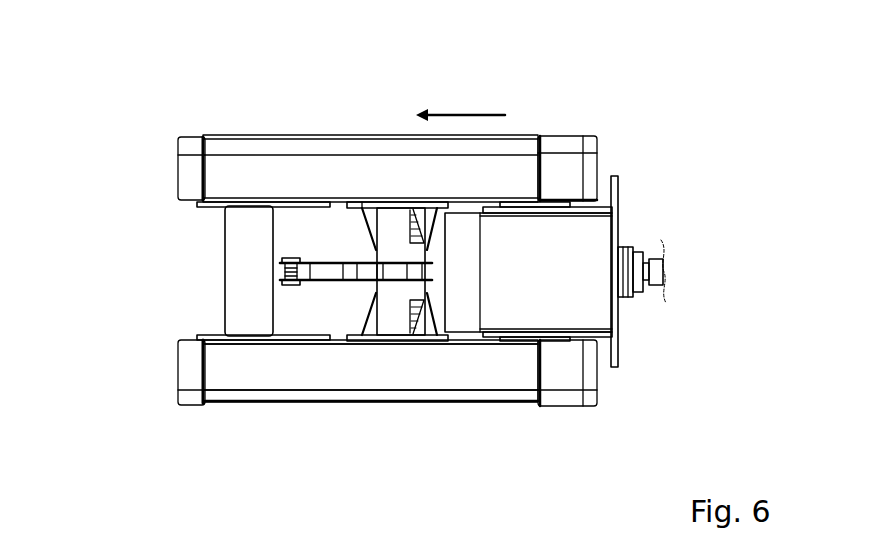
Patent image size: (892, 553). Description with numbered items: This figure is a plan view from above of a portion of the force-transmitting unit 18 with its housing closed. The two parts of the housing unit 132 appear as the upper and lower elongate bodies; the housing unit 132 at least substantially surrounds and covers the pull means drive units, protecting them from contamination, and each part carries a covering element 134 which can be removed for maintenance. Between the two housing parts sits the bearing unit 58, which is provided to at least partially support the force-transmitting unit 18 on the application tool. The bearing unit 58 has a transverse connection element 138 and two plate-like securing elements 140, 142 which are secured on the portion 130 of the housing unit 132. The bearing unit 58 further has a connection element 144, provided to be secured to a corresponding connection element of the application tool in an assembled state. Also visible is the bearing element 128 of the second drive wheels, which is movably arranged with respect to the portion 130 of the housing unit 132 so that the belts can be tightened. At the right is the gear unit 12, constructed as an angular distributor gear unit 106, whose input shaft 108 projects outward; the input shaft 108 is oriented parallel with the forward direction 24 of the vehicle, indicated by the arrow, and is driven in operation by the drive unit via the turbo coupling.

The force-transmitting unit 18 is at (215, 125).
The bearing unit 58 is at (340, 276).
The plate-like securing element 142 is at (386, 203).
The forward direction 24 is at (452, 113).
The gear unit 12 is at (606, 240).
The angular distributor gear unit 106 is at (607, 225).
The input shaft 108 is at (660, 272).
The bearing element 128 is at (240, 265).
The connection element 144 is at (320, 280).
The portion of housing unit 130 is at (327, 348).
The transverse connection element 138 is at (392, 305).
The plate-like securing element 140 is at (410, 340).
The covering element 134 is at (413, 395).
The housing unit 132 is at (458, 412).